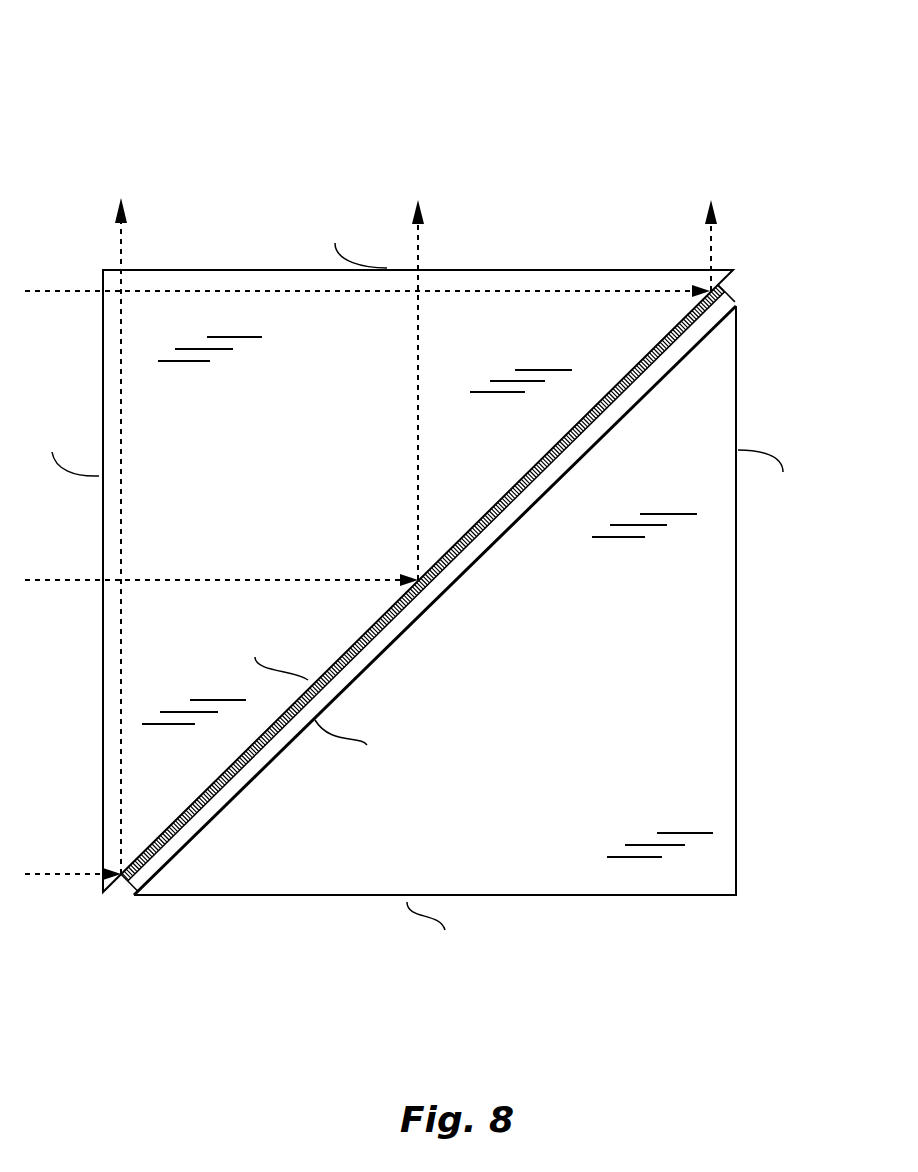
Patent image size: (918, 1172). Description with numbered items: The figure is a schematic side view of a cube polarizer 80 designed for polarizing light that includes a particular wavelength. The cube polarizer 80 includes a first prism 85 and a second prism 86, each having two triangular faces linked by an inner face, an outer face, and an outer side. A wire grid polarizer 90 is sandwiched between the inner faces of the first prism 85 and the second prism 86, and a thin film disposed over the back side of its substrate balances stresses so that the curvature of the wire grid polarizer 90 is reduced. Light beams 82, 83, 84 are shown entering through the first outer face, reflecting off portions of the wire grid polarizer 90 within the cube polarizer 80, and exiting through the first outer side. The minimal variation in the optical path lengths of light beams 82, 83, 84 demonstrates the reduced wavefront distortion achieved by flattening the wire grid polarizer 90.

The cube polarizer 80 is at (216, 95).
The light beam 82 is at (714, 247).
The light beam 83 is at (124, 247).
The light beam 84 is at (421, 246).
The first prism 85 is at (277, 489).
The second prism 86 is at (546, 750).
The wire grid polarizer 90 is at (728, 300).